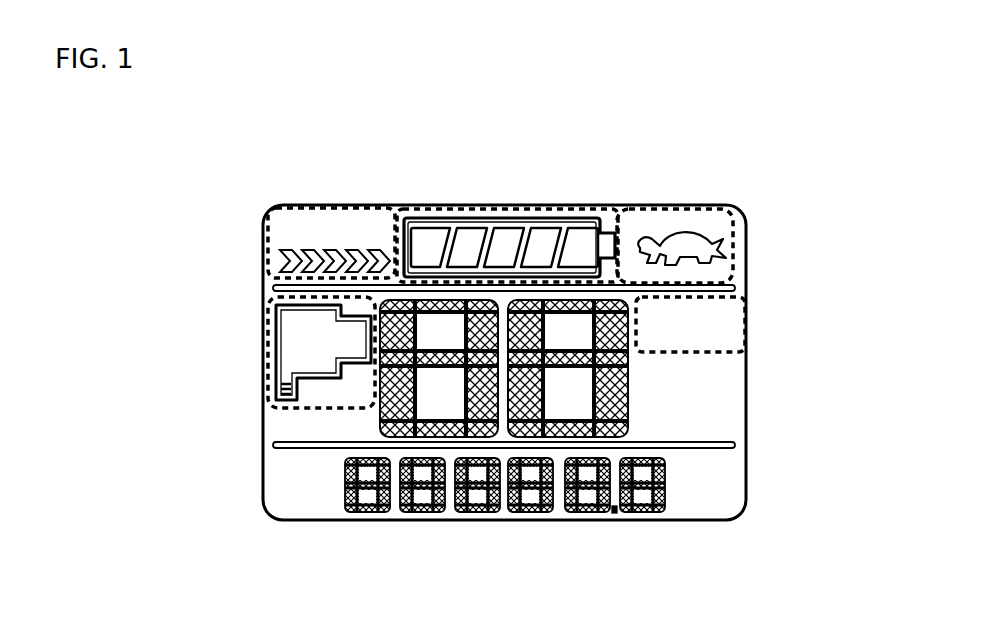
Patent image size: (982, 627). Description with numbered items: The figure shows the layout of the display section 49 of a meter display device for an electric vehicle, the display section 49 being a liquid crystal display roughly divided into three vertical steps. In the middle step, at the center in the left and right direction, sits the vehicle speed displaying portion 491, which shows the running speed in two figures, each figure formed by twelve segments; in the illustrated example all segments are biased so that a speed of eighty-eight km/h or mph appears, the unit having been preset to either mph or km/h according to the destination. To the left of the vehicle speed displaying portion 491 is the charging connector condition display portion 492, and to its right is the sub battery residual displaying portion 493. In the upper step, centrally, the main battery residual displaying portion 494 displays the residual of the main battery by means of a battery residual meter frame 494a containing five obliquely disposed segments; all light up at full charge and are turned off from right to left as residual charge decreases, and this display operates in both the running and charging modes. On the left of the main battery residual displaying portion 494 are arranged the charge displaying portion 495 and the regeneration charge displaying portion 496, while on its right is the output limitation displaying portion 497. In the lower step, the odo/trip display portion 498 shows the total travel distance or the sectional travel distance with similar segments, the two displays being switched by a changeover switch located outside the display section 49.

The display section 49 is at (402, 194).
The vehicle speed displaying portion 491 is at (376, 425).
The charging connector condition display portion 492 is at (262, 380).
The sub battery residual displaying portion 493 is at (747, 307).
The main battery residual displaying portion 494 is at (541, 198).
The battery residual meter frame 494a is at (617, 207).
The charge displaying portion 495 is at (348, 206).
The regeneration charge displaying portion 496 is at (268, 268).
The output limitation displaying portion 497 is at (733, 232).
The odo/trip display portion 498 is at (318, 507).